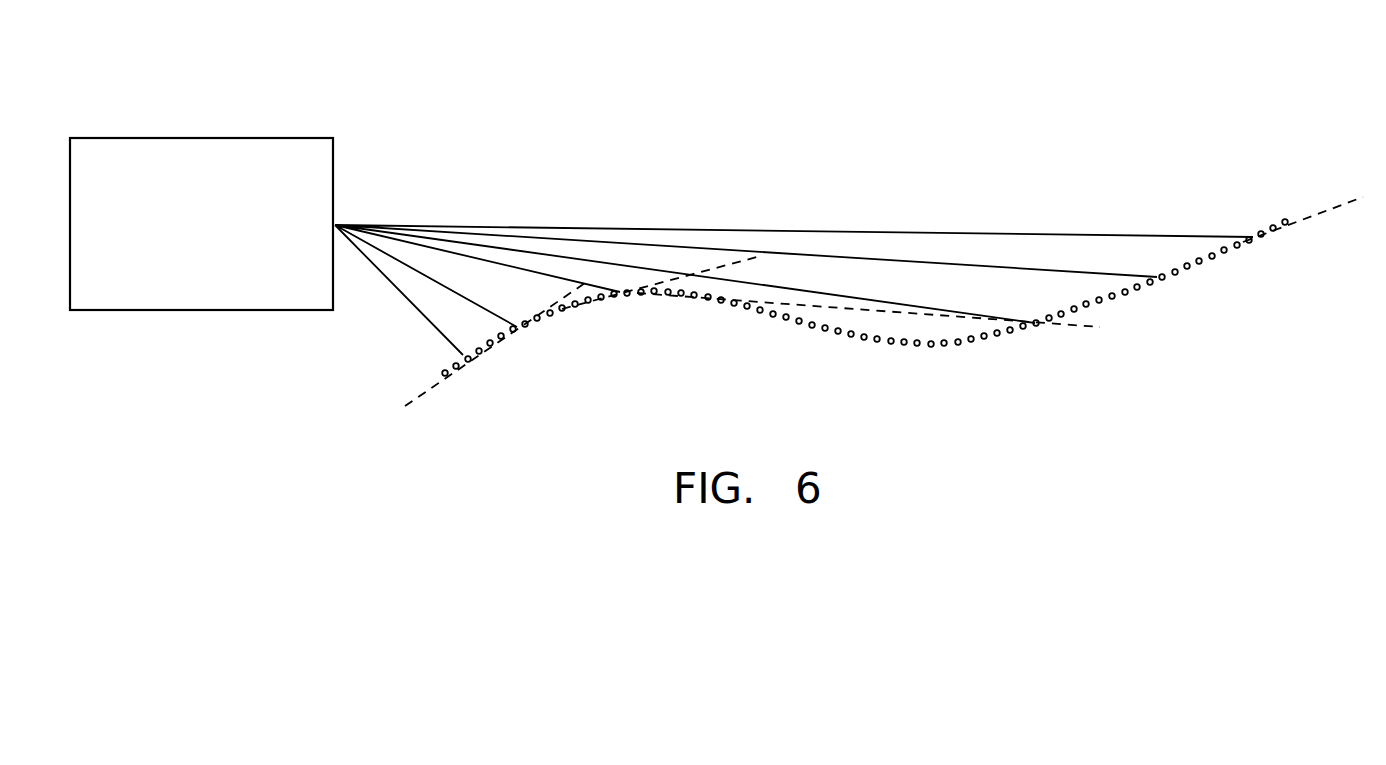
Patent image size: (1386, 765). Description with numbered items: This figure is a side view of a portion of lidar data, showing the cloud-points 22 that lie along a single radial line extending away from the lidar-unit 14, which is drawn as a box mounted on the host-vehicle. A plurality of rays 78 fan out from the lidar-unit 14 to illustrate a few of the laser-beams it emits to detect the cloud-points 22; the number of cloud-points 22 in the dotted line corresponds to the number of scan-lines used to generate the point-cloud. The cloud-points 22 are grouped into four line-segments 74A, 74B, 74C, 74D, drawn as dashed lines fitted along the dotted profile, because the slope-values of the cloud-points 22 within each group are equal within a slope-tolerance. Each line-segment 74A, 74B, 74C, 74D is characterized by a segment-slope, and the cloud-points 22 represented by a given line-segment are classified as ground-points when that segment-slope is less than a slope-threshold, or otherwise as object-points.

The lidar-unit 14 is at (138, 138).
The rays 78 is at (467, 218).
The line-segment 74A is at (599, 272).
The line-segment 74B is at (727, 264).
The line-segment 74C is at (945, 313).
The line-segment 74D is at (1352, 203).
The cloud-points 22 is at (969, 342).